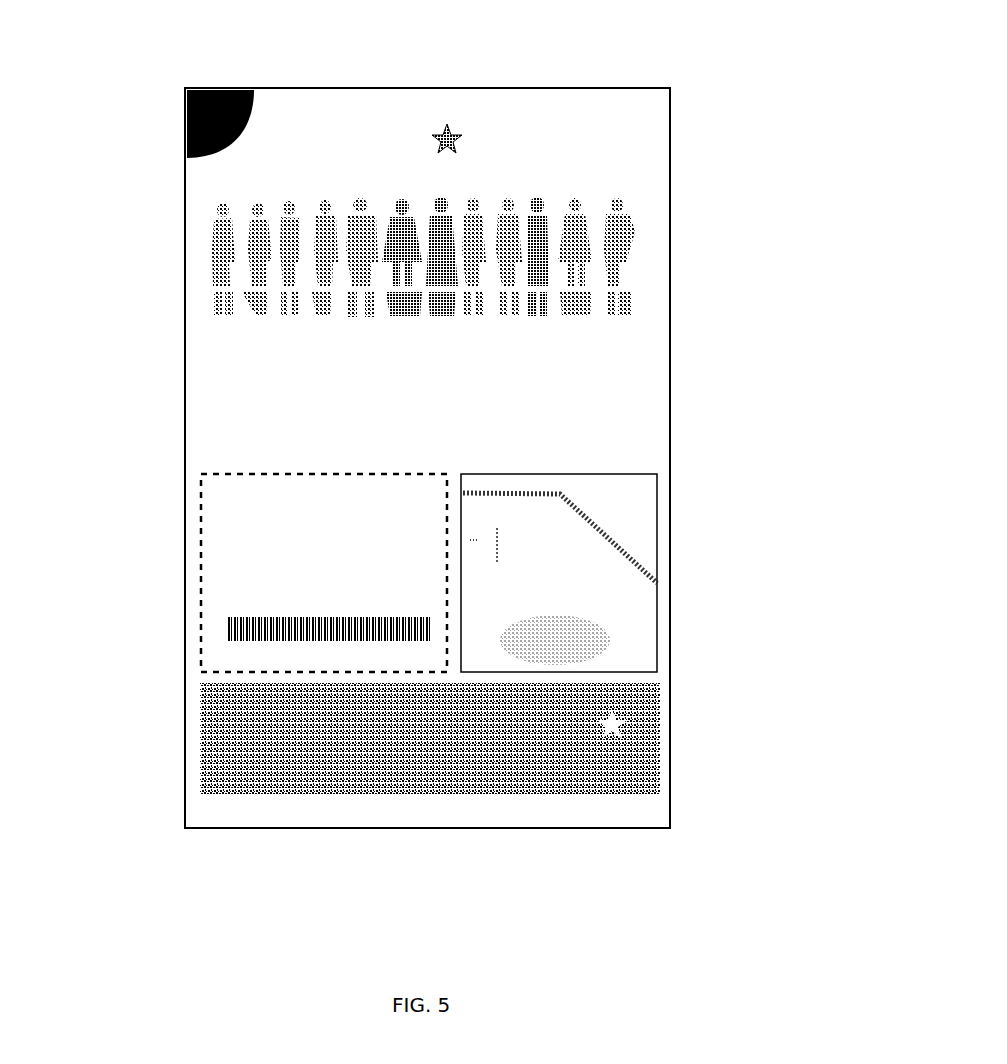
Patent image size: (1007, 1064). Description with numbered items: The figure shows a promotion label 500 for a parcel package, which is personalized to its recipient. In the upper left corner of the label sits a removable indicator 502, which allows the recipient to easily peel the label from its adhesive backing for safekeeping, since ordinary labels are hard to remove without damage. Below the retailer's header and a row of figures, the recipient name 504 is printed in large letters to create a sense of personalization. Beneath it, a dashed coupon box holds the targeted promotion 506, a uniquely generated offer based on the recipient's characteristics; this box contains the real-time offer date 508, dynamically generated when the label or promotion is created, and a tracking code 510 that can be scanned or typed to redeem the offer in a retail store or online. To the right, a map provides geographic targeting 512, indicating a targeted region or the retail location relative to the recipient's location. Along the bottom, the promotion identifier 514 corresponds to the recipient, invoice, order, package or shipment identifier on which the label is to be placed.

The promotion label 500 is at (424, 80).
The removable indicator 502 is at (206, 86).
The recipient name 504 is at (603, 355).
The targeted promotion 506 is at (218, 476).
The real-time offer date 508 is at (308, 558).
The tracking code 510 is at (212, 630).
The geographic targeting 512 is at (637, 520).
The promotion identifier 514 is at (502, 812).